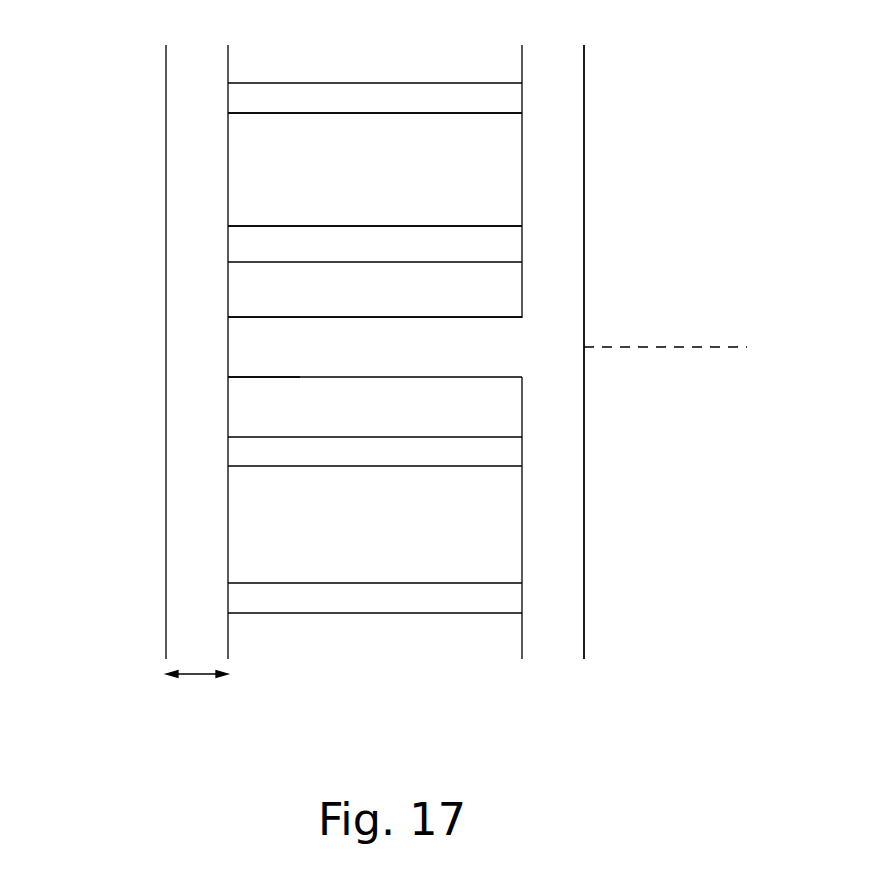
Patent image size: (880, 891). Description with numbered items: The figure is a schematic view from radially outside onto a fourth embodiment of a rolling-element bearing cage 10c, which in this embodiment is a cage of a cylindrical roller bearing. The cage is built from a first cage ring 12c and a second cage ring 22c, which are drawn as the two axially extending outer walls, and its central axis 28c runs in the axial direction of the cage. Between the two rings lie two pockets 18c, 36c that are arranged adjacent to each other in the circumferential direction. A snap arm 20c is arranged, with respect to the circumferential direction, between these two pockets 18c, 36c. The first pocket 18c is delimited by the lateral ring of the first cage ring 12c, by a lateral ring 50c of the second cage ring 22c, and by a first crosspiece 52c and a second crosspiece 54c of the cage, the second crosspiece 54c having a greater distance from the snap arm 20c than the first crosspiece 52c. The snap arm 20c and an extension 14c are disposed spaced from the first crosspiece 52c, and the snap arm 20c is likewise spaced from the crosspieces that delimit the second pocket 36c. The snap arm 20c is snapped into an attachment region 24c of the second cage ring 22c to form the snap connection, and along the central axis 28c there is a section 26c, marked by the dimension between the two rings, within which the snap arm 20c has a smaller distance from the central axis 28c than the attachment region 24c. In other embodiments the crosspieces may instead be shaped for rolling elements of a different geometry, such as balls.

The rolling-element bearing cage 10c is at (657, 134).
The first cage ring 12c is at (584, 409).
The extension 14c is at (390, 360).
The pocket 18c is at (390, 174).
The snap arm 20c is at (230, 378).
The second cage ring 22c is at (166, 168).
The attachment region 24c is at (193, 342).
The section 26c is at (197, 691).
The central axis 28c is at (665, 332).
The pocket 36c is at (390, 535).
The lateral ring 50c is at (166, 478).
The first crosspiece 52c is at (420, 240).
The second crosspiece 54c is at (350, 92).